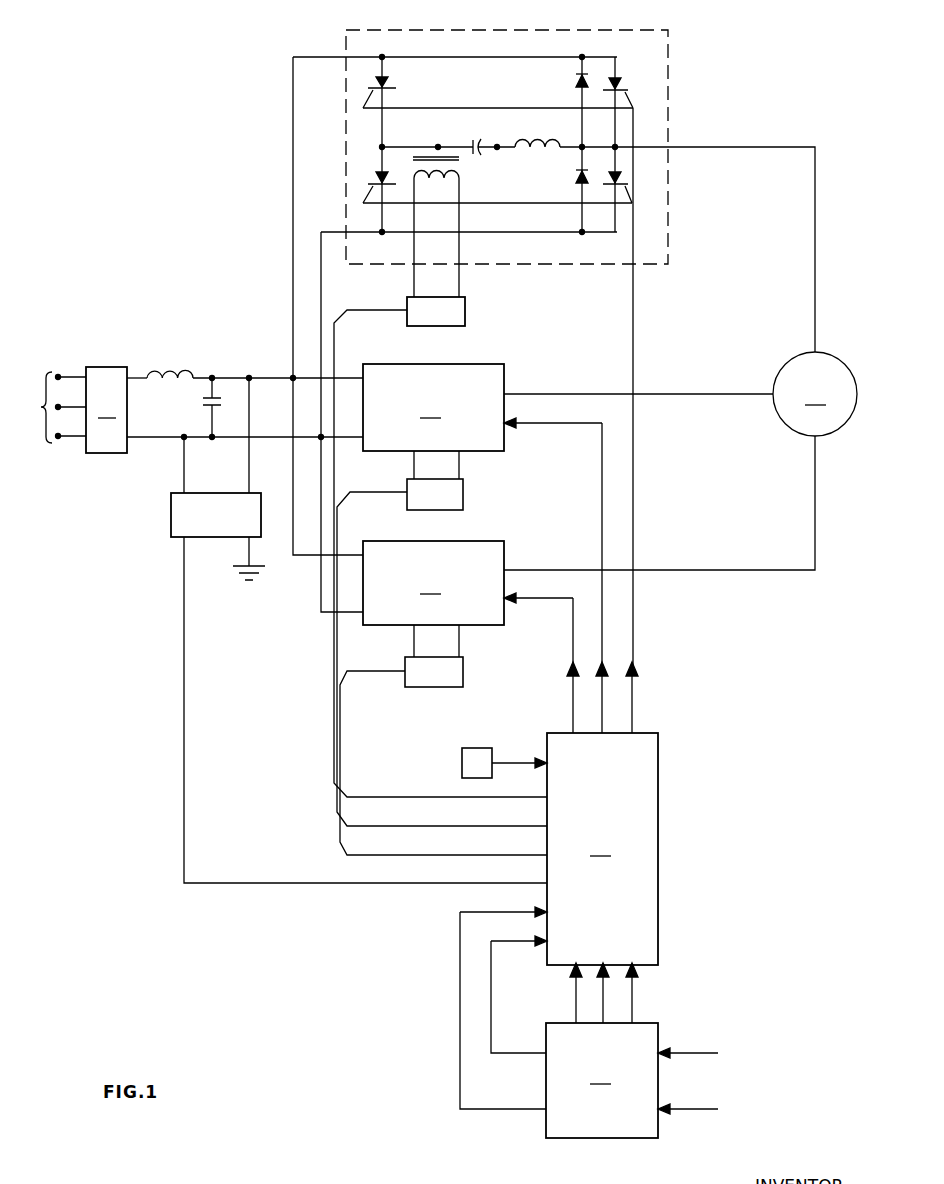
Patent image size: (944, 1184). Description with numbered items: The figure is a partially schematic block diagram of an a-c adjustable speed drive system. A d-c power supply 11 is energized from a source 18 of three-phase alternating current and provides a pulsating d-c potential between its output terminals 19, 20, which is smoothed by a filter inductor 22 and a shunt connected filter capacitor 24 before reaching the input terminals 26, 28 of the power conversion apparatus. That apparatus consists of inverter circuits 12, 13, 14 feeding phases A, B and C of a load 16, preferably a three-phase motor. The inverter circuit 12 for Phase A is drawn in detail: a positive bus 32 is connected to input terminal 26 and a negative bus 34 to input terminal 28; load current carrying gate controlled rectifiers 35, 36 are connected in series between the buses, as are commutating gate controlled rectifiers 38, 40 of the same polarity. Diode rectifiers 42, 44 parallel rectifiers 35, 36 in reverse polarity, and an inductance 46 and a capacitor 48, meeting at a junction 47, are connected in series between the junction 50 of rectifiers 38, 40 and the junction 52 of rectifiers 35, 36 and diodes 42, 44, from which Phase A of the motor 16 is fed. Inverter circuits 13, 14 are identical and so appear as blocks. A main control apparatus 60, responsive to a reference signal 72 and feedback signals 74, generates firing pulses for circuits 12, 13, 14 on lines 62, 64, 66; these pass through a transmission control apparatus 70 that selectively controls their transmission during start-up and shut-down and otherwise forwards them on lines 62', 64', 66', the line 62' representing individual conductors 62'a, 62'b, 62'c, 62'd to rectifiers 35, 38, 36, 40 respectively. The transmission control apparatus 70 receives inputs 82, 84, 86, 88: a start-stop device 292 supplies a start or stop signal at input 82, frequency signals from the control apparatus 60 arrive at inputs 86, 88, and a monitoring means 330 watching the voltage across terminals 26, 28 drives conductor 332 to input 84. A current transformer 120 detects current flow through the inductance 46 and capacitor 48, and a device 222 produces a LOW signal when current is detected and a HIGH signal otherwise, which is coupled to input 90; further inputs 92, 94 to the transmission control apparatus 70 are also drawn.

The d-c power supply 11 is at (106, 410).
The inverter circuit 12 is at (668, 30).
The inverter circuit 13 is at (568, 437).
The inverter circuit 14 is at (433, 614).
The load 16 is at (680, 347).
The source of three-phase alternating current 18 is at (36, 416).
The output terminal 19 is at (133, 378).
The output terminal 20 is at (130, 440).
The filter inductor 22 is at (172, 368).
The filter capacitor 24 is at (203, 399).
The input terminal 26 is at (292, 375).
The input terminal 28 is at (304, 436).
The positive bus 32 is at (315, 57).
The negative bus 34 is at (328, 230).
The gate controlled rectifier 35 is at (625, 82).
The gate controlled rectifier 36 is at (612, 180).
The gate controlled rectifier 38 is at (405, 68).
The gate controlled rectifier 40 is at (369, 180).
The diode rectifier 42 is at (574, 75).
The diode rectifier 44 is at (572, 176).
The inductance 46 is at (557, 137).
The junction 47 is at (497, 150).
The capacitor 48 is at (479, 140).
The junction 50 is at (374, 147).
The junction 52 is at (604, 140).
The main control apparatus 60 is at (602, 1080).
The line 62 is at (648, 993).
The line 64 is at (593, 993).
The line 66 is at (559, 993).
The line 62' is at (648, 618).
The line 64' is at (556, 575).
The line 66' is at (541, 663).
The individual conductor 62'a is at (678, 91).
The individual conductor 62'b is at (498, 94).
The individual conductor 62'c is at (677, 195).
The individual conductor 62'd is at (497, 214).
The transmission control apparatus 70 is at (602, 849).
The reference signal 72 is at (706, 1050).
The feedback signal 74 is at (706, 1106).
The input 82 is at (540, 759).
The input 84 is at (536, 886).
The input 86 is at (532, 912).
The input 88 is at (532, 942).
The input 90 is at (534, 796).
The input line 92 is at (534, 823).
The input line 94 is at (534, 852).
The current transformer 120 is at (430, 144).
The means for producing a signal 222 is at (466, 313).
The start-stop device 292 is at (478, 748).
The voltage monitoring means 330 is at (172, 506).
The conductor 332 is at (184, 750).